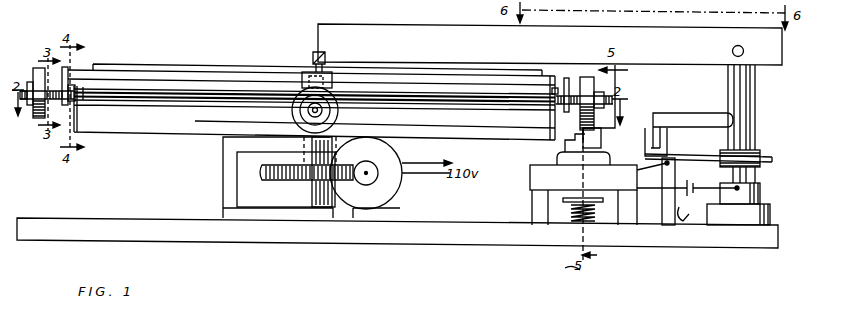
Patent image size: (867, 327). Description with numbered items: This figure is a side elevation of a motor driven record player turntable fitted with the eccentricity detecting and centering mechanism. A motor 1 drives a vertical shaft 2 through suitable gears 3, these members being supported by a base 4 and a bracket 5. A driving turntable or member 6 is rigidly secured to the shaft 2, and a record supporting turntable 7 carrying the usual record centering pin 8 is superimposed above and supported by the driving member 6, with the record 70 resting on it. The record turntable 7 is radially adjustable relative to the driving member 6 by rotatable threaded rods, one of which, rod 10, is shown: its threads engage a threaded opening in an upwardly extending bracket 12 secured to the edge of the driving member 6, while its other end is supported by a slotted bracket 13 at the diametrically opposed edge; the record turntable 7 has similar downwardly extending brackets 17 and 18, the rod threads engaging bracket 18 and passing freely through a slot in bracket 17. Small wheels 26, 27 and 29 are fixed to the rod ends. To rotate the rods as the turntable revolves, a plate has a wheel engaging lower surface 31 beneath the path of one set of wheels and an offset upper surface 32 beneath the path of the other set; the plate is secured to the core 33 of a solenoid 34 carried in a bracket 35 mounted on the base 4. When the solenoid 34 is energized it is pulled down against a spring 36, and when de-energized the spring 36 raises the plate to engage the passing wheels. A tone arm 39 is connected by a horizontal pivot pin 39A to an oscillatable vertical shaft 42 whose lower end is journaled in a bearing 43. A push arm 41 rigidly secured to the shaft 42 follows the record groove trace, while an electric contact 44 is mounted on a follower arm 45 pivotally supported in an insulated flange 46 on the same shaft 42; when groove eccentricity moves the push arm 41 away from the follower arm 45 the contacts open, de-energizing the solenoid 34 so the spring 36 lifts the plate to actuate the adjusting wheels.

The motor 1 is at (391, 179).
The vertical shaft 2 is at (307, 190).
The gears 3 is at (364, 168).
The base 4 is at (347, 241).
The bracket 5 is at (225, 175).
The driving turntable 6 is at (134, 131).
The record supporting turntable 7 is at (191, 70).
The record centering pin 8 is at (313, 60).
The rod 10 is at (466, 102).
The upwardly extending bracket 12 is at (78, 110).
The bracket 13 is at (552, 114).
The downwardly extending bracket 17 is at (68, 76).
The downwardly extending bracket 18 is at (563, 82).
The wheel 26 is at (587, 77).
The wheel 27 is at (36, 68).
The wheel 29 is at (339, 110).
The wheel engaging lower surface 31 is at (567, 140).
The wheel engaging upper surface 32 is at (602, 140).
The core 33 is at (557, 160).
The solenoid 34 is at (530, 182).
The bracket 35 is at (540, 196).
The spring 36 is at (590, 212).
The tone arm 39 is at (409, 40).
The horizontal pivot pin 39A is at (732, 51).
The push arm 41 is at (691, 120).
The vertical shaft 42 is at (755, 90).
The bearing 43 is at (762, 192).
The electric contact 44 is at (668, 145).
The follower arm 45 is at (770, 160).
The insulated flange 46 is at (756, 152).
The record 70 is at (141, 64).